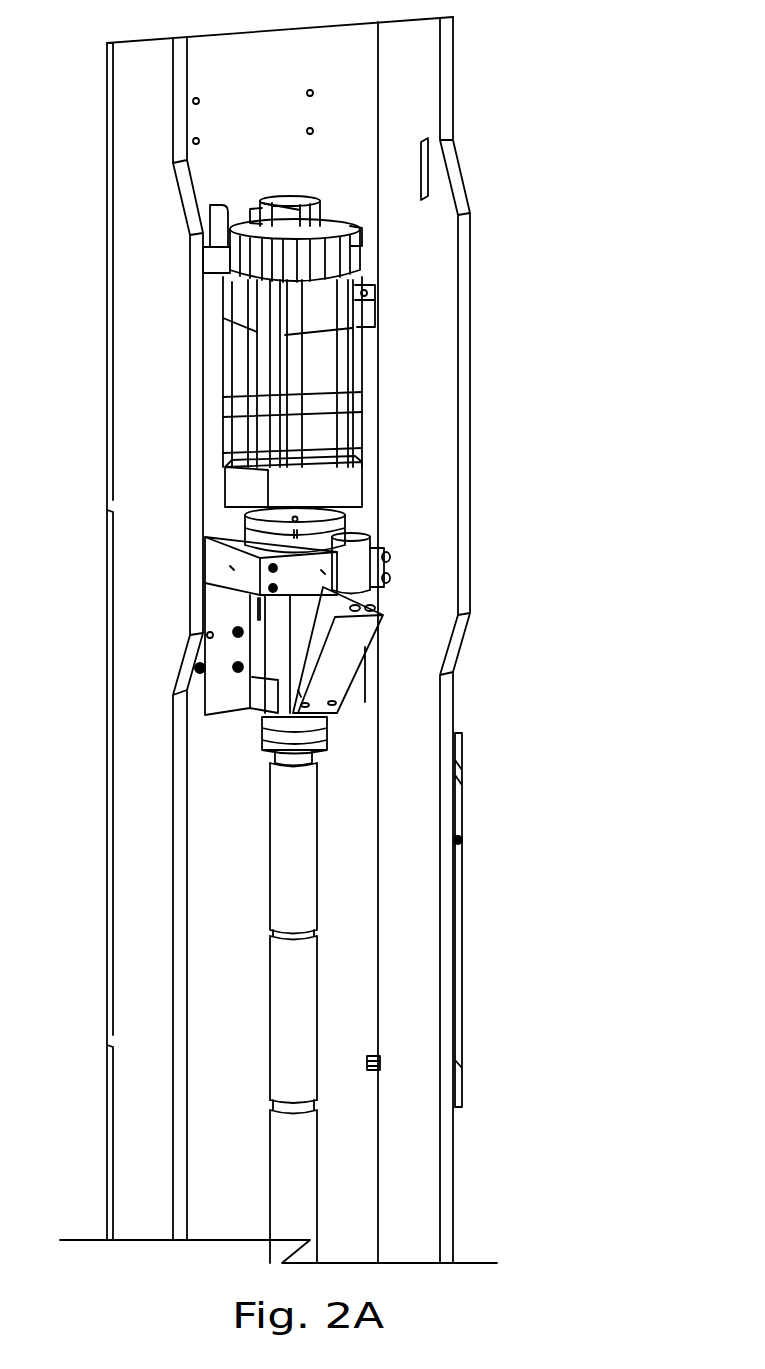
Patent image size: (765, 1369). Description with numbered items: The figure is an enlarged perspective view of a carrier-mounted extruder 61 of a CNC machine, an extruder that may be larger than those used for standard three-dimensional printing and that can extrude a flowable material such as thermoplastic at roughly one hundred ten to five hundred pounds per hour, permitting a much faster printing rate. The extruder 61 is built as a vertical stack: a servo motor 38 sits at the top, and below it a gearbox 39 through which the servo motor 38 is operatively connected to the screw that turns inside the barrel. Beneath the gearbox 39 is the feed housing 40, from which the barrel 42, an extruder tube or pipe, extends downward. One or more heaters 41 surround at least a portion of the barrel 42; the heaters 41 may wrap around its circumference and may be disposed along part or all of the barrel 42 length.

The servo motor 38 is at (365, 257).
The gearbox 39 is at (365, 484).
The feed housing 40 is at (372, 535).
The heaters 41 is at (315, 818).
The barrel 42 is at (318, 932).
The extruder 61 is at (415, 427).